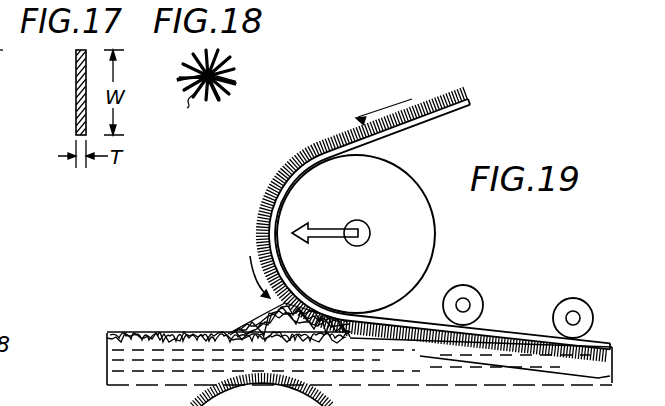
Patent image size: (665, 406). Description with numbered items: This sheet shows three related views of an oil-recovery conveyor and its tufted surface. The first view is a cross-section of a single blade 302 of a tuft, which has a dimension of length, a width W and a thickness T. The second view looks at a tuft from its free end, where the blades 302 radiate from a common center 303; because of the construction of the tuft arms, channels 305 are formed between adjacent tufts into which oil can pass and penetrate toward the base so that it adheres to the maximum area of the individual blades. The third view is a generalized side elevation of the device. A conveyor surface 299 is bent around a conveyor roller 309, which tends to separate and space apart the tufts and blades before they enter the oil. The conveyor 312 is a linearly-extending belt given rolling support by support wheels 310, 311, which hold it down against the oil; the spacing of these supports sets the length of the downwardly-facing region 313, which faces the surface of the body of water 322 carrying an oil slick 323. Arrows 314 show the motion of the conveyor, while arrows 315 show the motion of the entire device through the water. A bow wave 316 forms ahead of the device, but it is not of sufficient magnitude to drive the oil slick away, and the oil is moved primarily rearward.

In FIG. 17, the blade 302 is at (76, 108).
In FIG. 18, the blade 302 is at (222, 96).
In FIG. 18, the filament tuft center 303 is at (248, 66).
In FIG. 18, the channels 305 is at (200, 96).
In FIG. 19, the conveyor surface 299 is at (433, 124).
In FIG. 19, the conveyor roller 309 is at (436, 234).
In FIG. 19, the support wheel 310 is at (470, 289).
In FIG. 19, the support wheel 311 is at (586, 290).
In FIG. 19, the conveyor 312 is at (478, 107).
In FIG. 19, the downwardly-facing region 313 is at (337, 341).
In FIG. 19, the arrows 314 is at (387, 106).
In FIG. 19, the arrows 315 is at (320, 228).
In FIG. 19, the bow wave 316 is at (258, 318).
In FIG. 19, the body of water 322 is at (107, 376).
In FIG. 19, the oil slick 323 is at (107, 335).